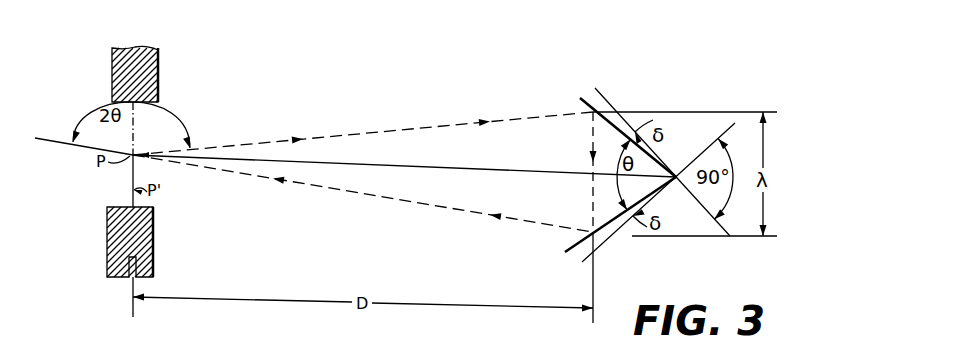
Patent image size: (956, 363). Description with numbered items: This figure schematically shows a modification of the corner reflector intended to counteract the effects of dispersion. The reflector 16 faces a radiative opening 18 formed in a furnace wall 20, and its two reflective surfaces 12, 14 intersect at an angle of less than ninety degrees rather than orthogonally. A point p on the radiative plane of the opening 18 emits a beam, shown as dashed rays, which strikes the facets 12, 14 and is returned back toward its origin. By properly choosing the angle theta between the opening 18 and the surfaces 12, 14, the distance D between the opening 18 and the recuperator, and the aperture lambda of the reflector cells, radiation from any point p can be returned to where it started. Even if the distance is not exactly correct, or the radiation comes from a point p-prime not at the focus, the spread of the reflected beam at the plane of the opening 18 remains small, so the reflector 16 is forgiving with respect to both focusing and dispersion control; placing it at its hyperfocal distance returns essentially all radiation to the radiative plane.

The surface 12 is at (572, 245).
The surface 14 is at (581, 104).
The reflector 16 is at (609, 232).
The radiative opening 18 is at (118, 207).
The furnace wall 20 is at (108, 258).